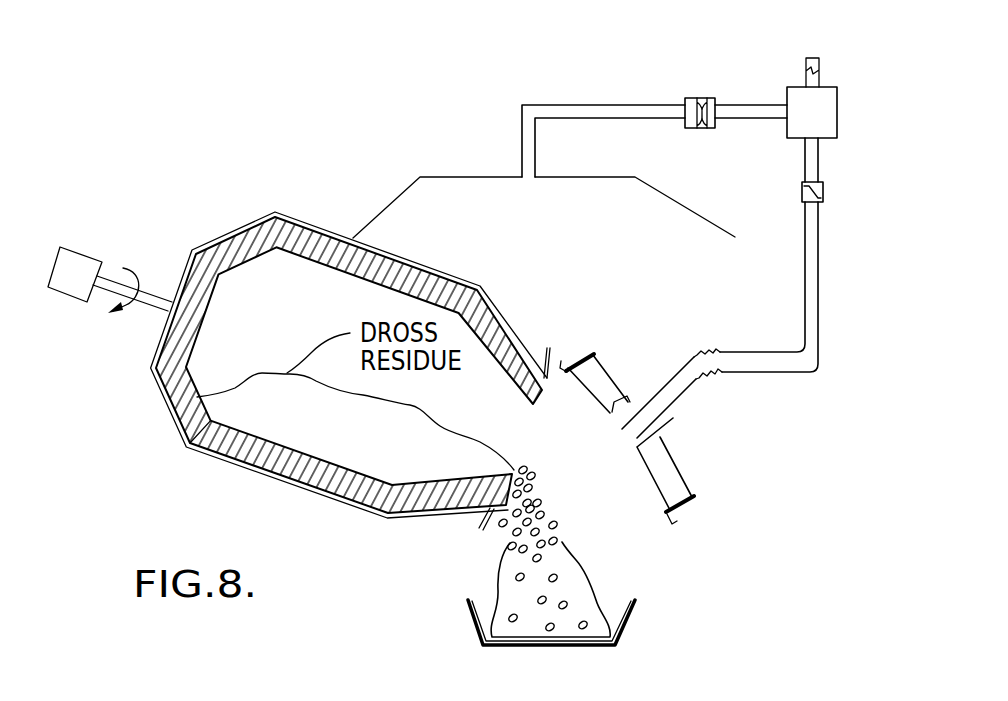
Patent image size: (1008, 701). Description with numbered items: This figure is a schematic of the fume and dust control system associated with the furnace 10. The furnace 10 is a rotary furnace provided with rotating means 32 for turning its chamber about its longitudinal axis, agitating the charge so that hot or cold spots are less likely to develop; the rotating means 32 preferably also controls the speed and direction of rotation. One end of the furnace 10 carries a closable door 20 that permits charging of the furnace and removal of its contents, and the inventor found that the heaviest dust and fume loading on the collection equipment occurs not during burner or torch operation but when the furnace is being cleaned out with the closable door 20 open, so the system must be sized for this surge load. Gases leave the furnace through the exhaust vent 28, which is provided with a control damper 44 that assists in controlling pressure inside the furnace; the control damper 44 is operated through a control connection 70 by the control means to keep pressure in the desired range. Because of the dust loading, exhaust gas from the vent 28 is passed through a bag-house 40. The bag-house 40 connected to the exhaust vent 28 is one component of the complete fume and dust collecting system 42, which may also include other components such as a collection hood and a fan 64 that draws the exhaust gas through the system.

The furnace 10 is at (270, 203).
The rotating means 32 is at (92, 262).
The fume and dust collecting system 42 is at (500, 125).
The fan 64 is at (708, 98).
The bag-house 40 is at (837, 112).
The control connection 70 is at (790, 192).
The control damper 44 is at (823, 191).
The exhaust vent 28 is at (675, 375).
The closable door 20 is at (616, 510).